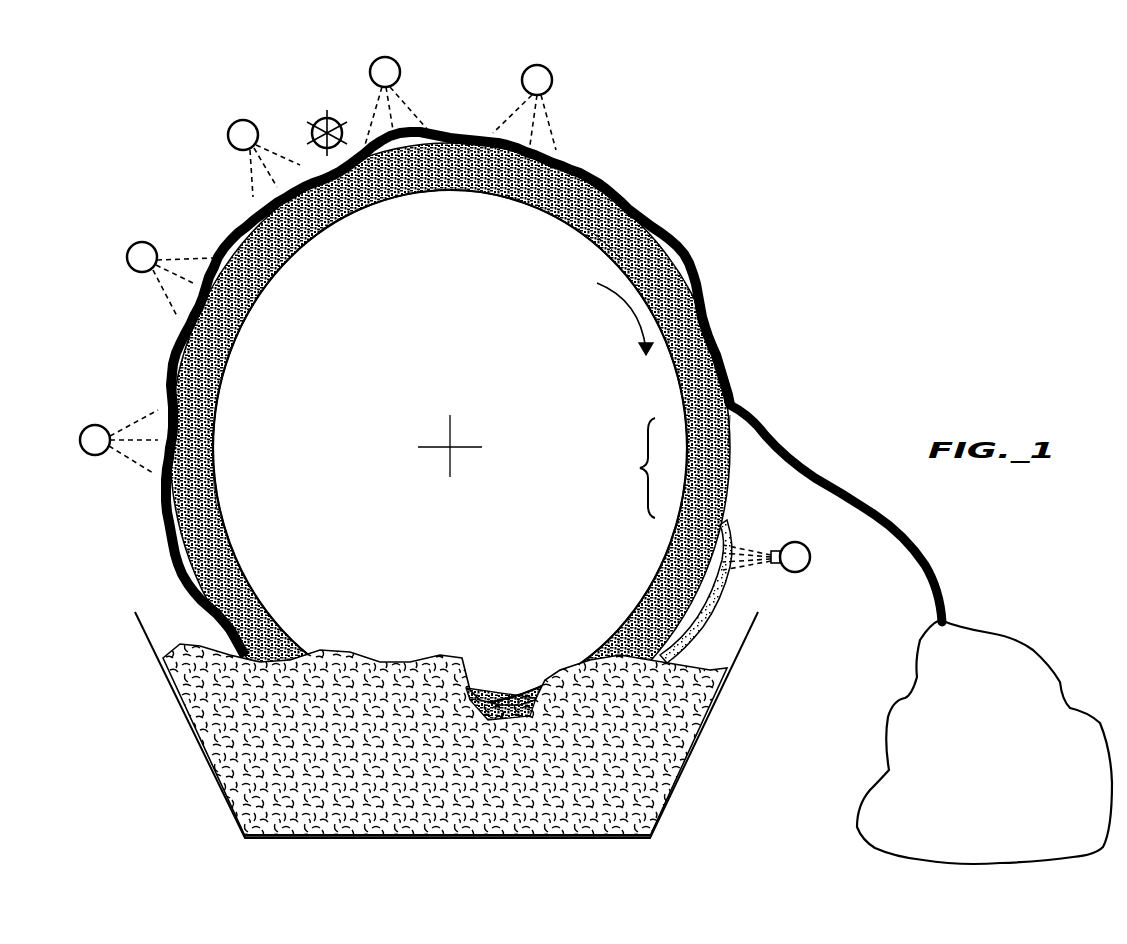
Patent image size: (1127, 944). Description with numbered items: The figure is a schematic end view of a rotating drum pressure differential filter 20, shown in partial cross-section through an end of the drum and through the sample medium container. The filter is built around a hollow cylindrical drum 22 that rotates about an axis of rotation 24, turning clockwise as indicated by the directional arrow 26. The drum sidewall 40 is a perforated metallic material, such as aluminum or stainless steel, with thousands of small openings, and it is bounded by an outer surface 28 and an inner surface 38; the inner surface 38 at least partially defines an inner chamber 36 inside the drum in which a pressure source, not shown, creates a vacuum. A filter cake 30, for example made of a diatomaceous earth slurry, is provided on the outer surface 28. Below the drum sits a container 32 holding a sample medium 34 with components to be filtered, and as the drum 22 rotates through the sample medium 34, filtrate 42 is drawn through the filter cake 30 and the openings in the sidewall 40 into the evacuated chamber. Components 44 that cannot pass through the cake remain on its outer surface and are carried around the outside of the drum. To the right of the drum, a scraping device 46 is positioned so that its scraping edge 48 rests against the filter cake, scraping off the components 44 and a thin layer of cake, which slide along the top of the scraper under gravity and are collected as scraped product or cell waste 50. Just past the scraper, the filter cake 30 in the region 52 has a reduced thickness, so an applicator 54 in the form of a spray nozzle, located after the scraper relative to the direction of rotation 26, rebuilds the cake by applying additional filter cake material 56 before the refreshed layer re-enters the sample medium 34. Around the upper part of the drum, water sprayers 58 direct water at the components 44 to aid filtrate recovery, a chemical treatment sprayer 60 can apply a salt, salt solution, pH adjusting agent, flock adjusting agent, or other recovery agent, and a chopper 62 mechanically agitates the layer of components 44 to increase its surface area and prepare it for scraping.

The rotating drum pressure differential filter 20 is at (748, 248).
The hollow cylindrical drum 22 is at (225, 386).
The axis of rotation 24 is at (455, 449).
The directional arrow 26 is at (620, 311).
The outer surface 28 is at (213, 504).
The filter cake 30 is at (630, 188).
The container 32 is at (180, 722).
The sample medium 34 is at (668, 810).
The inner chamber 36 is at (460, 260).
The inner surface 38 is at (593, 233).
The drum sidewall 40 is at (318, 232).
The filtrate 42 is at (481, 688).
The components 44 is at (165, 505).
The scraping device 46 is at (850, 498).
The scraping edge 48 is at (733, 430).
The scraped product or cell waste 50 is at (1007, 760).
The region 52 is at (641, 468).
The applicator 54 is at (812, 565).
The filter cake material 56 is at (722, 580).
The water sprayers 58 is at (383, 57).
The chemical treatment sprayer 60 is at (236, 119).
The chopper 62 is at (315, 117).